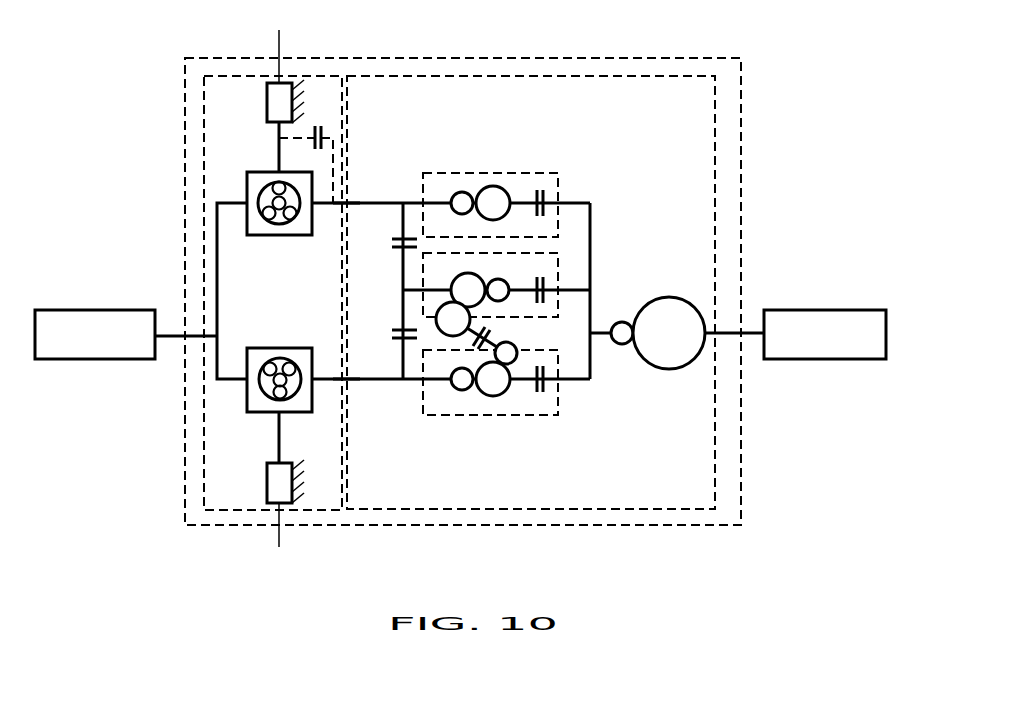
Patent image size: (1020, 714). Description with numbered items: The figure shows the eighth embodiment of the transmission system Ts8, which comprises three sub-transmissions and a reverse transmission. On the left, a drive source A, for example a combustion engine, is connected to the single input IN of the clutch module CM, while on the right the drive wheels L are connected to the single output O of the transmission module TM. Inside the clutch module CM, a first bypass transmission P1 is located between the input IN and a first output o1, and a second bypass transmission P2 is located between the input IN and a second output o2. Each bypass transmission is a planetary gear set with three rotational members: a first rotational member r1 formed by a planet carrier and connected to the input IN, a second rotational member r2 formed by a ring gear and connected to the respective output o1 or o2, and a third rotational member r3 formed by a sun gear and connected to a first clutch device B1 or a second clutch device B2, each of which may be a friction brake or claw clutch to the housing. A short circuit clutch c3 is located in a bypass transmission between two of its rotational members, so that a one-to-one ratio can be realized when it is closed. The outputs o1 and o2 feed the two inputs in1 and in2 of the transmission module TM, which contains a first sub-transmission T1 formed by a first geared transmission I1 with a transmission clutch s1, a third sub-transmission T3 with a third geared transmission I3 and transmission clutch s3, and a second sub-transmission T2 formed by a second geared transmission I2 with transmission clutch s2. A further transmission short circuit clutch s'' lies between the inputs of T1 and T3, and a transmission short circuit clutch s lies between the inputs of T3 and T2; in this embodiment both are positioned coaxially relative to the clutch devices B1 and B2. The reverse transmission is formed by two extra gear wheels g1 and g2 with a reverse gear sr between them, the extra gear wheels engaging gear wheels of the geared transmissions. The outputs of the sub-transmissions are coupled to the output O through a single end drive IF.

The transmission system Ts8 is at (185, 58).
The clutch module CM is at (223, 75).
The transmission module TM is at (658, 75).
The first clutch device B1 is at (285, 92).
The second clutch device B2 is at (285, 491).
The short circuit clutch c3 is at (316, 122).
The first bypass transmission P1 is at (258, 178).
The second bypass transmission P2 is at (248, 411).
The first rotational member r1 is at (248, 207).
The second rotational member r2 is at (312, 206).
The third rotational member r3 is at (278, 172).
The first output o1 is at (340, 200).
The second output o2 is at (338, 383).
The first input in1 is at (349, 200).
The second input in2 is at (351, 382).
The first geared transmission I1 is at (475, 190).
The second geared transmission I2 is at (473, 387).
The third geared transmission I3 is at (488, 282).
The transmission clutch s1 is at (540, 190).
The transmission clutch s2 is at (540, 393).
The transmission clutch s3 is at (542, 275).
The transmission short circuit clutch s is at (390, 333).
The further transmission short circuit clutch s'' is at (386, 244).
The first sub-transmission T1 is at (559, 172).
The second sub-transmission T2 is at (555, 415).
The third sub-transmission T3 is at (558, 253).
The extra gear wheel g1 is at (448, 313).
The extra gear wheel g2 is at (508, 352).
The reverse gear sr is at (480, 340).
The end drive IF is at (633, 318).
The input IN is at (205, 338).
The output O is at (707, 335).
The drive source A is at (88, 338).
The drive wheels L is at (828, 340).